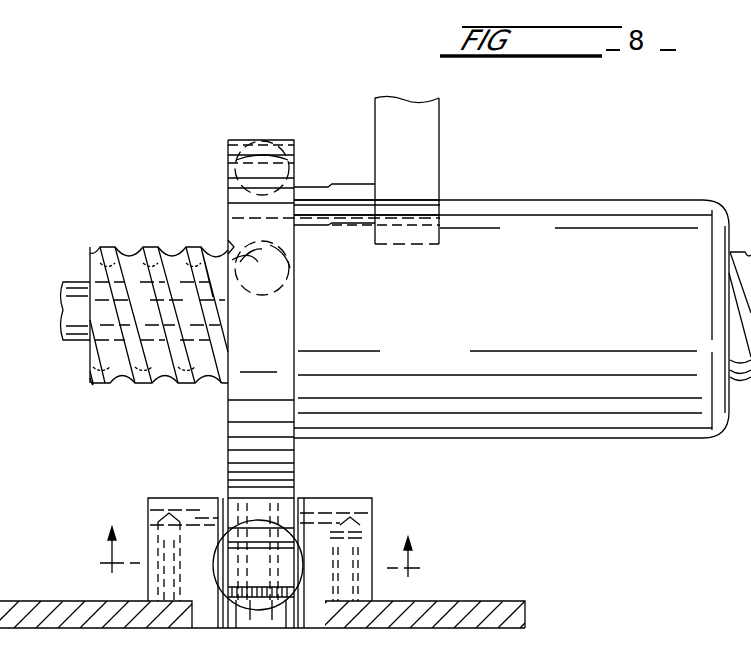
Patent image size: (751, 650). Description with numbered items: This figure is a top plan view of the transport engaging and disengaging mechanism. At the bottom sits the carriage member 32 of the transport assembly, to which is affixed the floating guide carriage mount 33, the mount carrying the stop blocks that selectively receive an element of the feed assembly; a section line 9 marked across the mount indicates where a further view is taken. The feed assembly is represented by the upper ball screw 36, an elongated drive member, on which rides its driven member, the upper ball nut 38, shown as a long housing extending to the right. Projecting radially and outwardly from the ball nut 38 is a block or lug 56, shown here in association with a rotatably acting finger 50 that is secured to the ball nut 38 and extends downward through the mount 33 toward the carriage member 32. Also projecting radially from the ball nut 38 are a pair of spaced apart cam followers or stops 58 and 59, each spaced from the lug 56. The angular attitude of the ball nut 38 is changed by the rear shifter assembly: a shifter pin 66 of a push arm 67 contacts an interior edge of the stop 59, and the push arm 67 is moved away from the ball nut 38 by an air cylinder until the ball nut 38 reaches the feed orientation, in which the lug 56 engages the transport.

The section line 9- 9 is at (261, 562).
The carriage member 32 is at (445, 612).
The floating guide carriage mount 33 is at (358, 512).
The upper ball screw 36 is at (100, 368).
The upper ball nut 38 is at (491, 281).
The finger 50 is at (243, 462).
The lug 56 is at (277, 518).
The cam follower 58 is at (240, 247).
The cam follower 59 is at (262, 150).
The shifter pin 66 is at (305, 197).
The push arm 67 is at (428, 163).